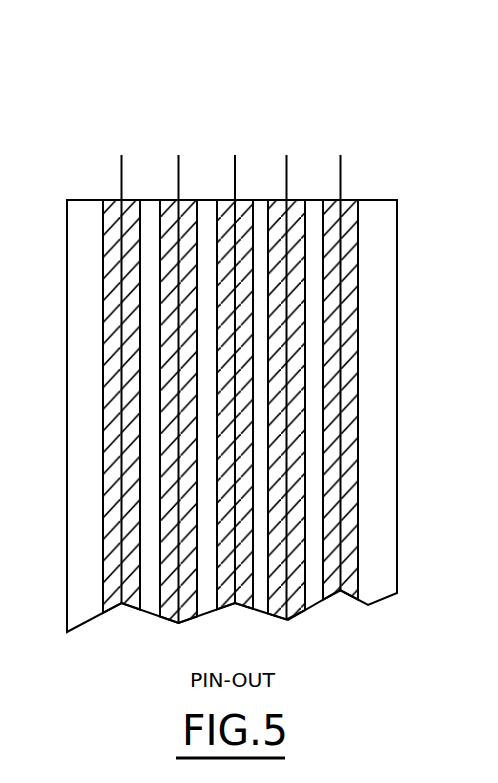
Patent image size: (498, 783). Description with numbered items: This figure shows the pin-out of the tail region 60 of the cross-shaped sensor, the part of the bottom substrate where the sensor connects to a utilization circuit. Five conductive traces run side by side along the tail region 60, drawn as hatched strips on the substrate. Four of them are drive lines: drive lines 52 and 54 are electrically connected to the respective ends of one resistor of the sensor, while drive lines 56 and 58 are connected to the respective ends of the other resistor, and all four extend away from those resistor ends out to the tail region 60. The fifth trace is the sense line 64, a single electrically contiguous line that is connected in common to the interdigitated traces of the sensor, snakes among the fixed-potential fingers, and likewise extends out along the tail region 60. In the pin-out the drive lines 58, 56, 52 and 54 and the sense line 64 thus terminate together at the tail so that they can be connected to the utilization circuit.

The tail region 60 is at (382, 79).
The drive line 58 is at (123, 180).
The drive line 56 is at (180, 183).
The sense line 64 is at (235, 183).
The drive line 52 is at (287, 183).
The drive line 54 is at (341, 183).